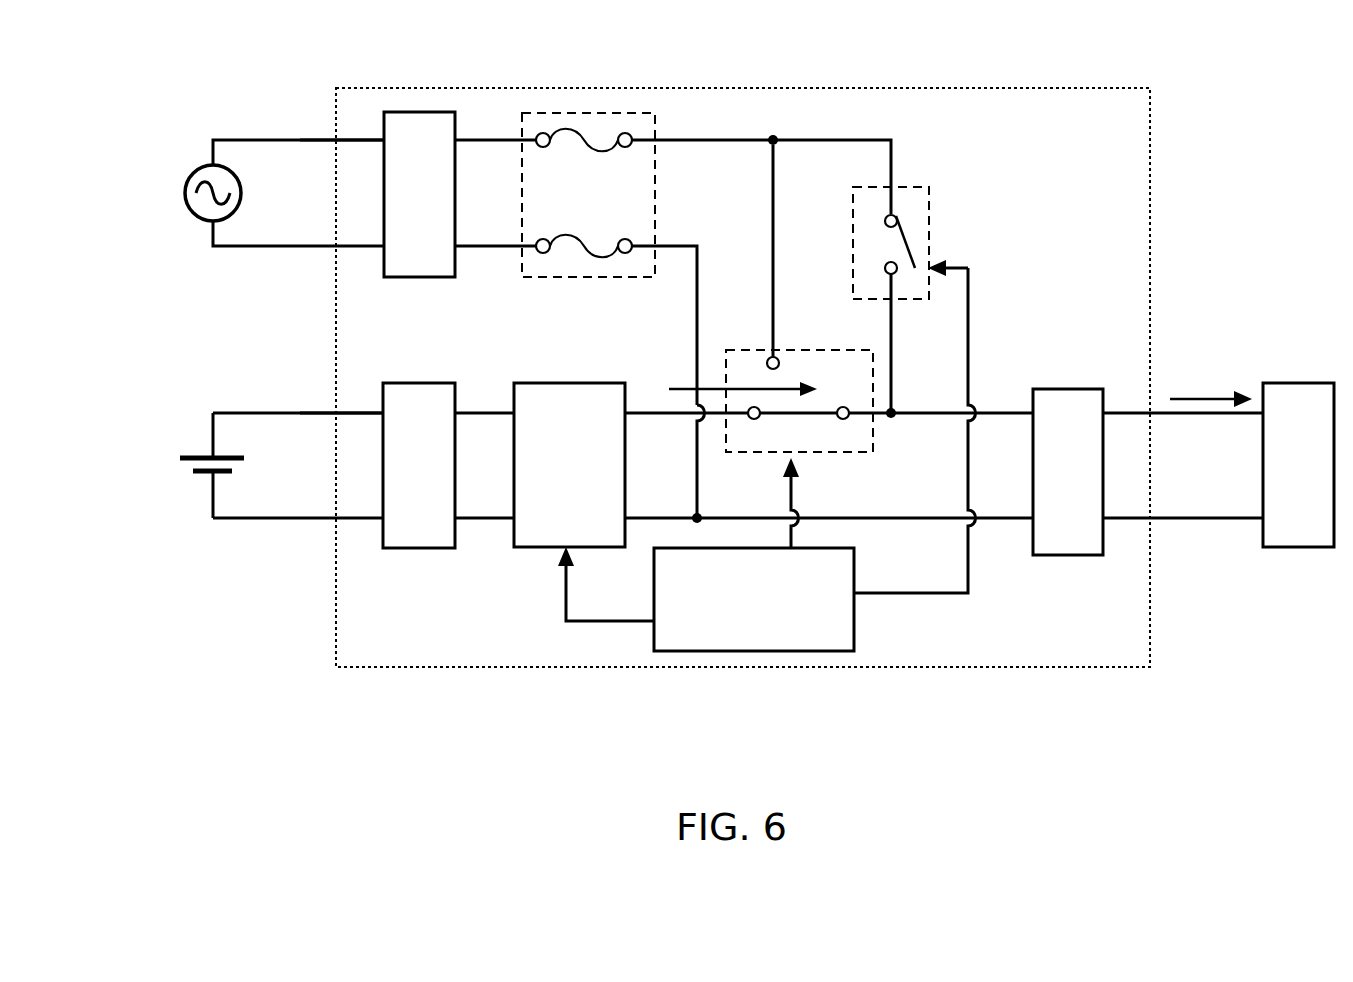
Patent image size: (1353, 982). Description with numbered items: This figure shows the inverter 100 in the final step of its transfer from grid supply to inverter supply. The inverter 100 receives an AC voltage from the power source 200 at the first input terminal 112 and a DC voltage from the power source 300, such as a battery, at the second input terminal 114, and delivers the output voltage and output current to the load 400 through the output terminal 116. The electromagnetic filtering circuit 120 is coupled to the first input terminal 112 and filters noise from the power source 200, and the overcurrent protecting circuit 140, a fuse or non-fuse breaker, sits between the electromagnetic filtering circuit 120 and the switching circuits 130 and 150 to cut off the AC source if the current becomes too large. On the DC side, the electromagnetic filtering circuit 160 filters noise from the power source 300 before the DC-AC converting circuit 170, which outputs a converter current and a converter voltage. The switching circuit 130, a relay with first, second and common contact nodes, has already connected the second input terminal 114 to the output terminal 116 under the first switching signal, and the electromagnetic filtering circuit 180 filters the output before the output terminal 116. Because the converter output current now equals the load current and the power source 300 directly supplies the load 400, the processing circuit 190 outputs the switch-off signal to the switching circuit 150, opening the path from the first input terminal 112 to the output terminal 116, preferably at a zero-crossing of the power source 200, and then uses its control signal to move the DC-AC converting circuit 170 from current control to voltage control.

The inverter 100 is at (1150, 122).
The first input terminal 112 is at (336, 139).
The second input terminal 114 is at (336, 411).
The output terminal 116 is at (1150, 413).
The electromagnetic filtering circuit 120 is at (398, 207).
The switching circuit 130 is at (757, 347).
The overcurrent protecting circuit 140 is at (655, 117).
The switching circuit 150 is at (929, 246).
The electromagnetic filtering circuit 160 is at (398, 478).
The DC-AC converting circuit 170 is at (548, 478).
The electromagnetic filtering circuit 180 is at (1047, 483).
The processing circuit 190 is at (733, 612).
The power source 200 is at (184, 213).
The power source 300 is at (193, 474).
The load 400 is at (1277, 478).